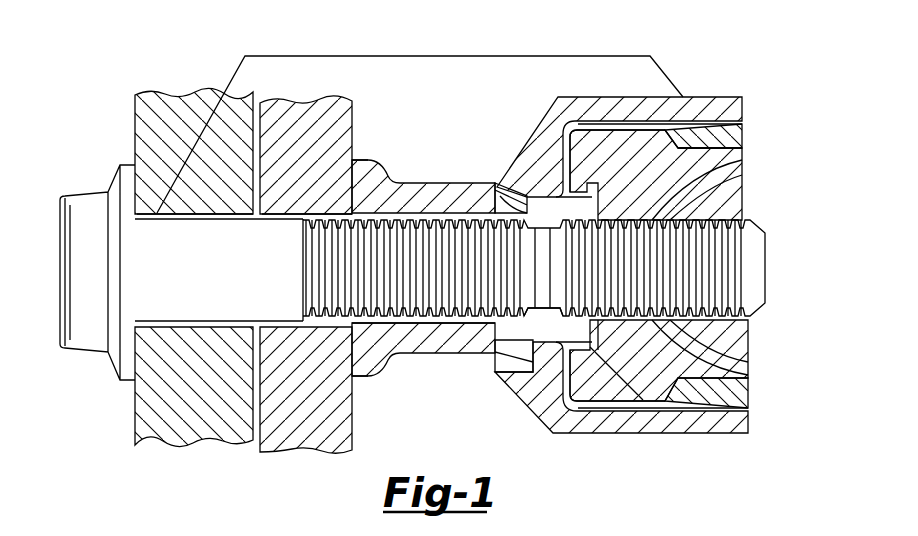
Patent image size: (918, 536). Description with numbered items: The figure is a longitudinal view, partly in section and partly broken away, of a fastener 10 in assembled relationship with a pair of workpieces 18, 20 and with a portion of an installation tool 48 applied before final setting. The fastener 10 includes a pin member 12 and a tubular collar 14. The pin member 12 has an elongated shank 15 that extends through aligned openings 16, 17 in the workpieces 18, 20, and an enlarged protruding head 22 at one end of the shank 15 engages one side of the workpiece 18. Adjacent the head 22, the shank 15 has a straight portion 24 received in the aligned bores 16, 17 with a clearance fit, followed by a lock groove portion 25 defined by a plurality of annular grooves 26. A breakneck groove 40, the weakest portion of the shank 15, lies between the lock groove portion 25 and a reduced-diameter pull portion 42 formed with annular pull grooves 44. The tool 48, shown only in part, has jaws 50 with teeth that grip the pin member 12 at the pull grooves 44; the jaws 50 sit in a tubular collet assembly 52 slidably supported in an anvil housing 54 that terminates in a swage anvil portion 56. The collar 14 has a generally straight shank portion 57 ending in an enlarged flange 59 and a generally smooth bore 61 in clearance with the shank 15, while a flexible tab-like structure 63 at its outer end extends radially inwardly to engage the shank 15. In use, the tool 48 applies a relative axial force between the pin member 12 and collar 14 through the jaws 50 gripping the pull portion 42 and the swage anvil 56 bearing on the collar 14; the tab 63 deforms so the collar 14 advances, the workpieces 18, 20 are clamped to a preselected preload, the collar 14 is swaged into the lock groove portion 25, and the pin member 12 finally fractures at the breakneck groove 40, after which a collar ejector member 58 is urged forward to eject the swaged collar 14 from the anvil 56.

The fastener 10 is at (407, 136).
The pin member 12 is at (100, 181).
The tubular collar 14 is at (431, 172).
The elongated shank 15 is at (440, 56).
The opening 16 is at (211, 213).
The opening 17 is at (271, 213).
The workpiece 18 is at (178, 97).
The workpiece 20 is at (328, 101).
The enlarged protruding head 22 is at (96, 284).
The straight portion 24 is at (223, 286).
The lock groove portion 25 is at (476, 334).
The annular grooves 26 is at (412, 323).
The breakneck groove 40 is at (533, 335).
The pull portion 42 is at (712, 212).
The annular pull grooves 44 is at (682, 148).
The tool 48 is at (678, 88).
The jaws 50 is at (700, 165).
The tubular collet assembly 52 is at (699, 157).
The anvil housing 54 is at (622, 80).
The swage anvil portion 56 is at (540, 205).
The straight shank portion 57 is at (490, 194).
The collar ejector member 58 is at (557, 333).
The enlarged flange 59 is at (368, 159).
The smooth bore 61 is at (396, 323).
The flexible tab-like structure 63 is at (515, 211).